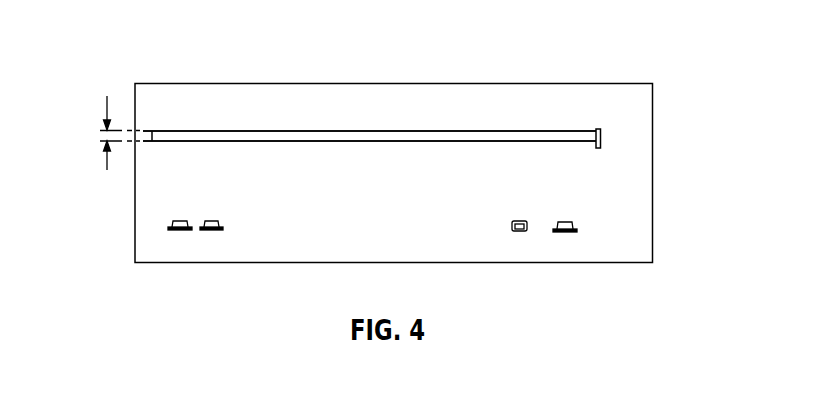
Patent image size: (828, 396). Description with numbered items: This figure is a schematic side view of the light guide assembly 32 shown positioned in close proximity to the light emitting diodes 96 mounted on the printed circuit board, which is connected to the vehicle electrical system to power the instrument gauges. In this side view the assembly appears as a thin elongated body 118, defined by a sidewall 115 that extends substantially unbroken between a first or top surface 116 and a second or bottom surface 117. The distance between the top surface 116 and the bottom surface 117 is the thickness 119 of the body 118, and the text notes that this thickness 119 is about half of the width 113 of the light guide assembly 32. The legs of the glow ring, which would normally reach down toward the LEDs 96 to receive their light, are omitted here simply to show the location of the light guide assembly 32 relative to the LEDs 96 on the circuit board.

The rod / shaft 32 is at (188, 121).
The body 118 is at (247, 131).
The sidewall 115 is at (430, 140).
The second or bottom surface 117 is at (387, 143).
The first or top surface 116 is at (502, 131).
The width 113 is at (601, 138).
The thickness 119 is at (107, 106).
The light emitting diode 96 is at (179, 244).